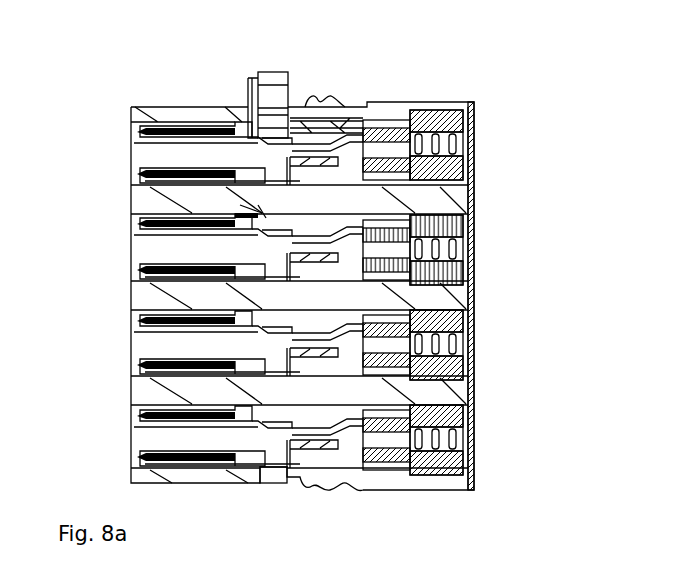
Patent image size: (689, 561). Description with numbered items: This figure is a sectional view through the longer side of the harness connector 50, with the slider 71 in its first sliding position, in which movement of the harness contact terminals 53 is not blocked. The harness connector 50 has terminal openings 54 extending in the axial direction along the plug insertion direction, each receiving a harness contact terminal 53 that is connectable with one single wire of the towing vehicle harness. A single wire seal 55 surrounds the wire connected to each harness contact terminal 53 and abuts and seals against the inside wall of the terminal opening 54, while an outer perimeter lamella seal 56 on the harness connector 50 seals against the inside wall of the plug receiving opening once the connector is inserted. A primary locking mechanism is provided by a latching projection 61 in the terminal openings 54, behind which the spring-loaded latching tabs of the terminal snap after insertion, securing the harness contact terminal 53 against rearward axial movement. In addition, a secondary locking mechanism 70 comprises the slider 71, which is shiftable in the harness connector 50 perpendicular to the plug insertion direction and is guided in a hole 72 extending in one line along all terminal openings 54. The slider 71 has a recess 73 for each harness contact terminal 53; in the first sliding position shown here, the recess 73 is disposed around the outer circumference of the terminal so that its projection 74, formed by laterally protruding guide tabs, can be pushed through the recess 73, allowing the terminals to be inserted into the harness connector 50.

The harness connector 50 is at (460, 490).
The harness contact terminal 53 is at (145, 174).
The terminal opening 54 is at (343, 133).
The single wire seal 55 is at (430, 133).
The outer perimeter lamella seal 56 is at (338, 494).
The latching projection 61 is at (245, 218).
The secondary locking mechanism 70 is at (248, 73).
The slider 71 is at (274, 83).
The hole 72 is at (275, 478).
The recess 73 is at (262, 220).
The projection 74 is at (249, 218).